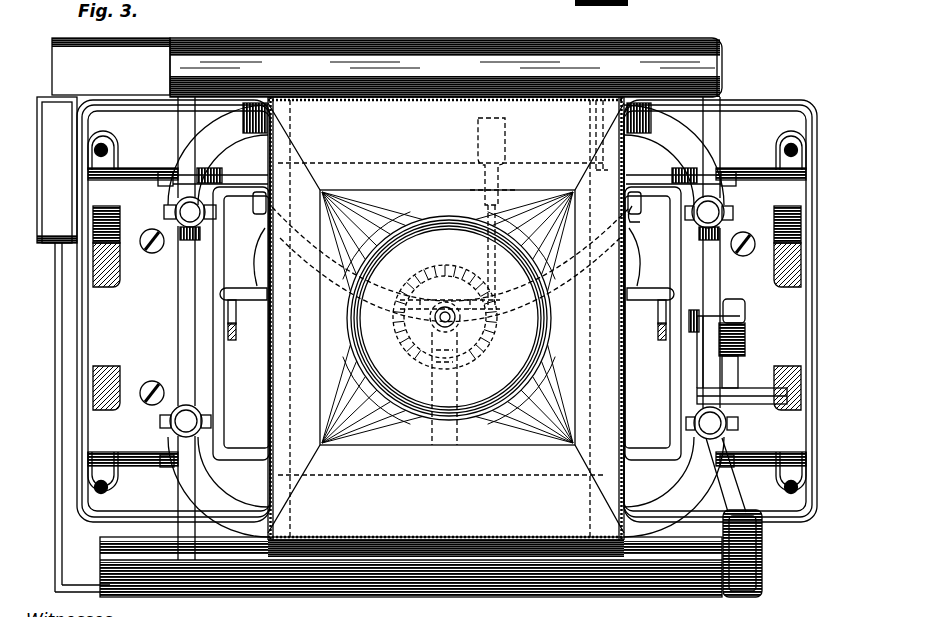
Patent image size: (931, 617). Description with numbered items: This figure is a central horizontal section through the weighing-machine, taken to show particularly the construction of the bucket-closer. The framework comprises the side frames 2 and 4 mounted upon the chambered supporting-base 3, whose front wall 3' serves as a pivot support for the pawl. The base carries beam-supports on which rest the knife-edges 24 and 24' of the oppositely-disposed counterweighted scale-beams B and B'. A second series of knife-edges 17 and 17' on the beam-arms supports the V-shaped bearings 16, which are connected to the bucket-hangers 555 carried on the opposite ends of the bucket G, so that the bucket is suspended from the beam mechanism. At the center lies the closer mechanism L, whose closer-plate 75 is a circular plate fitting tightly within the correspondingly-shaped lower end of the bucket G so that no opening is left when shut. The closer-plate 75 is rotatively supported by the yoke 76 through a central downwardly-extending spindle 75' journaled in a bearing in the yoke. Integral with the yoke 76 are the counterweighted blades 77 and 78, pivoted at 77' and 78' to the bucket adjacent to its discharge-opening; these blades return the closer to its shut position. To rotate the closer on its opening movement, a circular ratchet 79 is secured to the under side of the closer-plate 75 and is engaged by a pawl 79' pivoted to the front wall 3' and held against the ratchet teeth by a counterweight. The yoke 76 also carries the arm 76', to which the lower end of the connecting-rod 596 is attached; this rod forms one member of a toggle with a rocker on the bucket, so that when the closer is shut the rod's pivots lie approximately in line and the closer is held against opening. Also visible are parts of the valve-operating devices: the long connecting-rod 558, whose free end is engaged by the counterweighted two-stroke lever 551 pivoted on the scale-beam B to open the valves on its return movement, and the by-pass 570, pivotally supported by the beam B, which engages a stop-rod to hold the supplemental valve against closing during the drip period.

The scale-beam B' is at (387, 57).
The bucket G is at (410, 99).
The scale-beam B is at (411, 548).
The supporting-base 3 is at (172, 327).
The front wall of the base 3' is at (447, 164).
The side frame 4 is at (110, 288).
The side frame 2 is at (783, 288).
The knife-edge 17' is at (442, 314).
The knife-edge 17 is at (448, 416).
The bearing 16 is at (165, 214).
The bucket-hanger 555 is at (183, 392).
The knife-edge 24' is at (447, 160).
The knife-edge 24 is at (435, 477).
The counterweighted blade 78 is at (447, 118).
The pivot 78' is at (447, 323).
The arm of the yoke 76' is at (632, 276).
The connecting-rod 596 is at (234, 338).
The pivot 77' is at (647, 223).
The counterweighted blade 77 is at (590, 135).
The connecting-rod 558 is at (698, 311).
The by-pass 570 is at (744, 344).
The two-stroke lever 551 is at (742, 495).
The closer-plate 75 is at (458, 318).
The closer mechanism L is at (425, 222).
The yoke 76 is at (437, 317).
The spindle 75' is at (410, 328).
The ratchet 79 is at (414, 388).
The pawl 79' is at (475, 255).